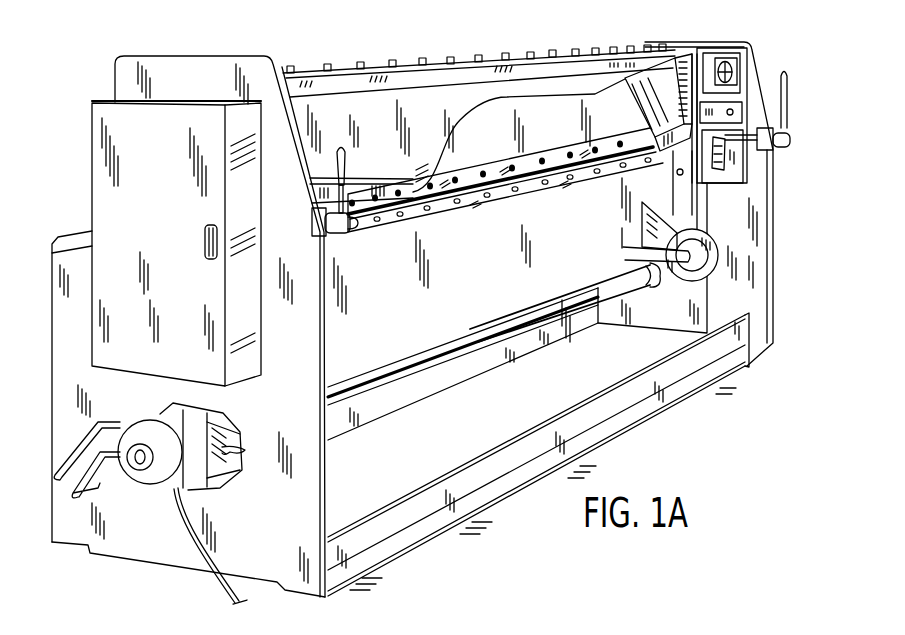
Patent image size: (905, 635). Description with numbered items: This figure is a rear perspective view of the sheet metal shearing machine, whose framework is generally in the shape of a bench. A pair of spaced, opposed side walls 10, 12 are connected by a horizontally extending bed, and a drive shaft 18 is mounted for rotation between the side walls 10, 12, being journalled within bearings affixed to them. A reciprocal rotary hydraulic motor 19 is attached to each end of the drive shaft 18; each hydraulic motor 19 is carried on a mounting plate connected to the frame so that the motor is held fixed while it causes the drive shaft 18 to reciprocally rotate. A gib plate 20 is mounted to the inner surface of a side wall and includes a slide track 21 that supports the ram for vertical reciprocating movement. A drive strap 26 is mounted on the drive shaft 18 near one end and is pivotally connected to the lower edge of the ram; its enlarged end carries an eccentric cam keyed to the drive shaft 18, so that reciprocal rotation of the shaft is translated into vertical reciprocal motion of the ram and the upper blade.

The side wall 10 is at (747, 306).
The side wall 12 is at (282, 531).
The drive shaft 18 is at (477, 340).
The reciprocal rotary hydraulic motor 19 is at (150, 490).
The gib plate 20 is at (742, 80).
The slide track 21 is at (690, 66).
The drive strap 26 is at (693, 203).